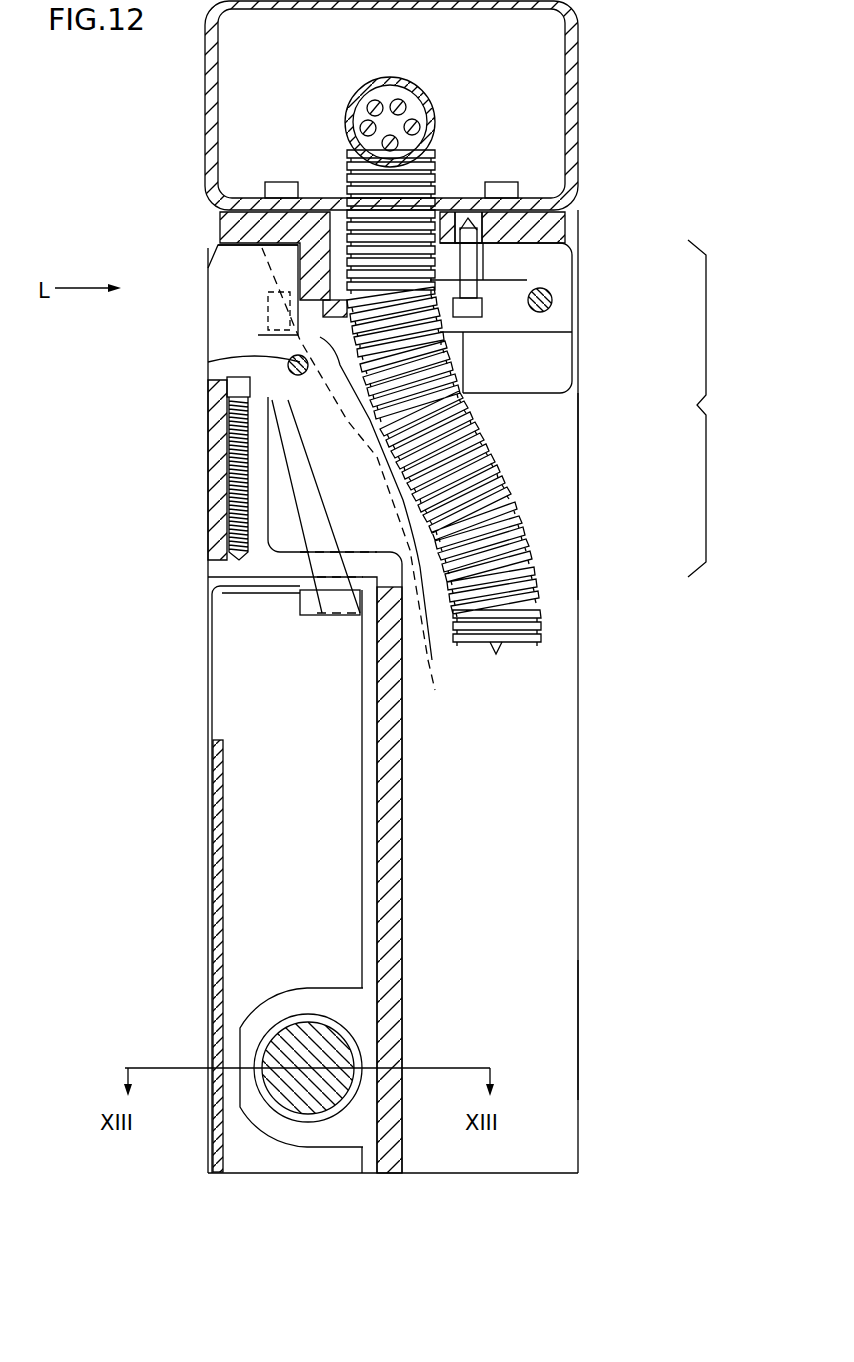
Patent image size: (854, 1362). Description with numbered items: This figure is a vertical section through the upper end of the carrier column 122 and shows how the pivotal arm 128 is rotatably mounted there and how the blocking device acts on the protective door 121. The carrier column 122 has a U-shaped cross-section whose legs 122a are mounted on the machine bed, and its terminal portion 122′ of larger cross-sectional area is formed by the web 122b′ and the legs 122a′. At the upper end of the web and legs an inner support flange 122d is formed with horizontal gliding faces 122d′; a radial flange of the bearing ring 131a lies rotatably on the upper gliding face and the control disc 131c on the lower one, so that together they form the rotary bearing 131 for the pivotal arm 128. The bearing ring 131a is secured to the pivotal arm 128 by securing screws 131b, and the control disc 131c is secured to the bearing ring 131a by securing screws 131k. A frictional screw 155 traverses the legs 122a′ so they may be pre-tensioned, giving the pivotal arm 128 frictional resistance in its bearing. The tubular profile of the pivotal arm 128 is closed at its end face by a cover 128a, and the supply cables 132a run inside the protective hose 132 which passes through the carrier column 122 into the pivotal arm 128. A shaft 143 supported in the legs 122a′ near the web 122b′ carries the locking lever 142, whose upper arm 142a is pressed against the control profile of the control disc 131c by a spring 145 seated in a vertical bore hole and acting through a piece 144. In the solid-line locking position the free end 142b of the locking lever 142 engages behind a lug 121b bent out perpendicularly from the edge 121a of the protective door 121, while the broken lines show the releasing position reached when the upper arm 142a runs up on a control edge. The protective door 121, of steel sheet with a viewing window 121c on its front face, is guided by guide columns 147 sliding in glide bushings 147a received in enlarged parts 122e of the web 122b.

The pivotal arm 128 is at (590, 78).
The cover 128a is at (325, 67).
The rotary bearing 131 is at (640, 180).
The bearing ring 131a is at (527, 233).
The securing screws 131b is at (505, 185).
The control disc 131c is at (520, 332).
The securing screws 131k is at (480, 310).
The protective hose 132 is at (545, 470).
The supply cables 132a is at (400, 105).
The frictional screw 155 is at (553, 300).
The carrier column 122 is at (590, 927).
The legs 122a is at (560, 1026).
The legs 122a′ is at (560, 548).
The web 122b is at (398, 855).
The web 122b′ is at (215, 540).
The inner support flange 122d is at (232, 243).
The gliding faces 122d′ is at (500, 258).
The enlarged parts 122e is at (306, 1000).
The terminal portion 122′ is at (734, 408).
The locking lever 142 is at (175, 325).
The upper arm 142a is at (207, 268).
The free end 142b is at (400, 660).
The shaft 143 is at (287, 366).
The piece 144 is at (228, 388).
The spring 145 is at (228, 470).
The protective door 121 is at (195, 800).
The edge 121a is at (236, 598).
The lug 121b is at (320, 614).
The viewing window 121c is at (218, 845).
The guide columns 147 is at (312, 1098).
The glide bushings 147a is at (262, 1038).